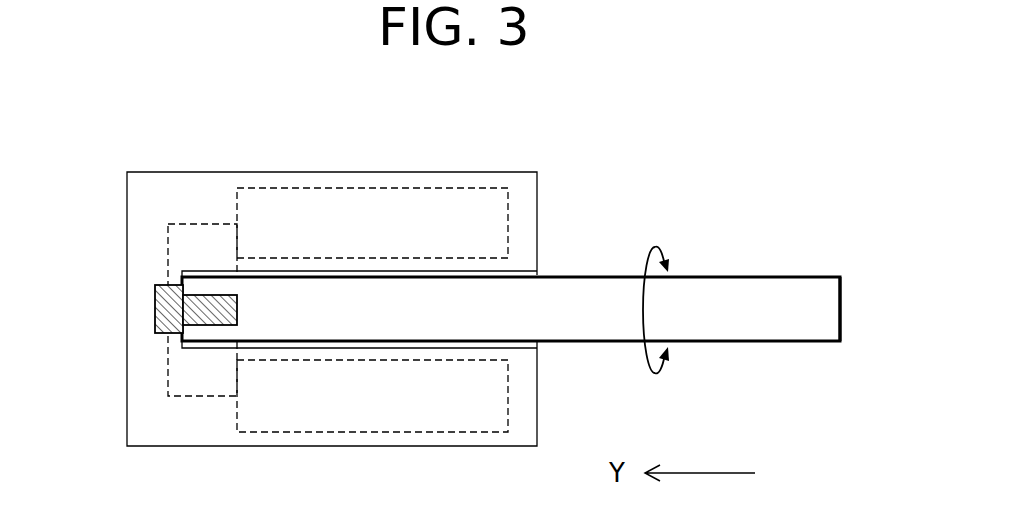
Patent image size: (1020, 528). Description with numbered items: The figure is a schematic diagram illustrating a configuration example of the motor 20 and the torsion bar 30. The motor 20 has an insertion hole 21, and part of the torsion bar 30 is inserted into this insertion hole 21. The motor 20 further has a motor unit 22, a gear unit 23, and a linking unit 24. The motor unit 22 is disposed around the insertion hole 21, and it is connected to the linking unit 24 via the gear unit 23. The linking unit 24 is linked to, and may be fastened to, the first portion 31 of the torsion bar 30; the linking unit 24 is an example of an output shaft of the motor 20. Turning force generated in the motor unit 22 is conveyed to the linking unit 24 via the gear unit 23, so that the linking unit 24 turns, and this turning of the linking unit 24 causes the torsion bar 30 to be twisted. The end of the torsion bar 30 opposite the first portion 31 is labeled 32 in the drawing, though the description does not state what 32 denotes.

The motor 20 is at (492, 146).
The insertion hole 21 is at (550, 270).
The motor unit 22 is at (365, 200).
The gear unit 23 is at (200, 224).
The linking unit 24 is at (154, 312).
The torsion bar 30 is at (532, 313).
The first portion 31 is at (213, 291).
The shaft end portion 32 is at (841, 302).